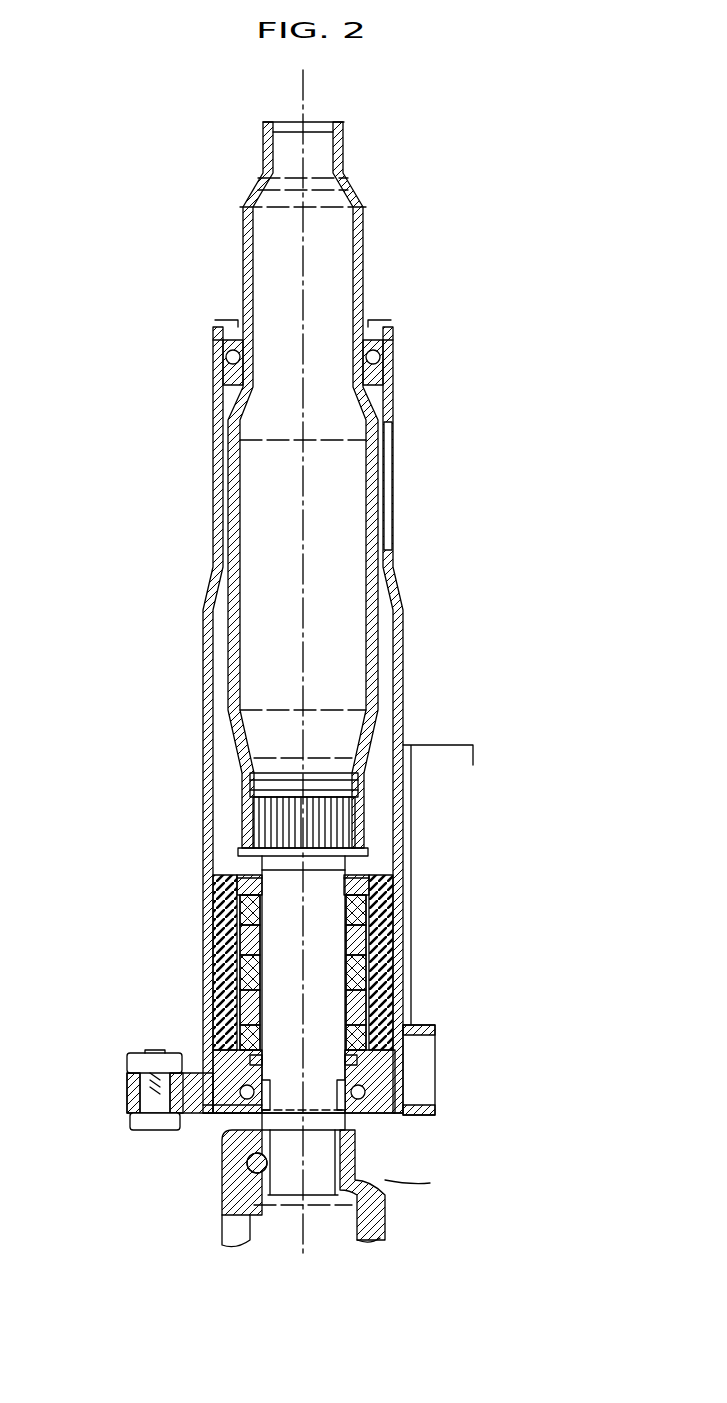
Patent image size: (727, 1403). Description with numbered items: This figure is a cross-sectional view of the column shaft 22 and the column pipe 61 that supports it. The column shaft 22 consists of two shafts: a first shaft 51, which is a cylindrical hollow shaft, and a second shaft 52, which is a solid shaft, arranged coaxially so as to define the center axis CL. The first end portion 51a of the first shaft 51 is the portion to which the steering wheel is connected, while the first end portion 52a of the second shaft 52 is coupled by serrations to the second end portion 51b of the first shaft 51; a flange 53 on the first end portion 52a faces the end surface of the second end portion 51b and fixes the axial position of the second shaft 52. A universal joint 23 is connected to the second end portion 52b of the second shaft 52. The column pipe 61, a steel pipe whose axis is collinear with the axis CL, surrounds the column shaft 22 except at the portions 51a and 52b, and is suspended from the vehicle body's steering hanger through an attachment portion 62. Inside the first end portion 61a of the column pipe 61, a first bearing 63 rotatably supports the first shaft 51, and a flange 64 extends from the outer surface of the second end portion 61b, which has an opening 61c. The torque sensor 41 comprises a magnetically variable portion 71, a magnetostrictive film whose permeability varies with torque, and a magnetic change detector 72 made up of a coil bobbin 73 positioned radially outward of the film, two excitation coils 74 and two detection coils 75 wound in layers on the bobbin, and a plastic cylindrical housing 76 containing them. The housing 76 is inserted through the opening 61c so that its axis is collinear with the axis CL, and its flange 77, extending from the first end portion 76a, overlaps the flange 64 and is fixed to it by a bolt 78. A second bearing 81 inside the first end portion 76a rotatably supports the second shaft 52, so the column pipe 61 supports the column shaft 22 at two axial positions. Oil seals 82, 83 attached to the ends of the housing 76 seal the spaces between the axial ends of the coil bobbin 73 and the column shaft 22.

The center axis CL is at (313, 95).
The column shaft 22 is at (82, 618).
The universal joint 23 is at (385, 1236).
The torque sensor 41 is at (350, 962).
The first shaft 51 is at (226, 660).
The first end portion of the first shaft 51a is at (348, 151).
The second end portion of the first shaft 51b is at (360, 805).
The second shaft 52 is at (288, 858).
The first end portion of the second shaft 52a is at (355, 825).
The second end portion of the second shaft 52b is at (338, 1179).
The flange 53 is at (375, 855).
The column pipe 61 is at (407, 612).
The first end portion of the column pipe 61a is at (393, 400).
The second end portion of the column pipe 61b is at (187, 1116).
The opening 61c is at (205, 1116).
The attachment portion 62 is at (448, 743).
The first bearing 63 is at (381, 355).
The flange 64 is at (127, 1073).
The magnetically variable portion 71 is at (327, 971).
The magnetic change detector 72 is at (402, 950).
The coil bobbin 73 is at (225, 885).
The excitation coil 74 is at (243, 912).
The detection coil 75 is at (243, 940).
The housing 76 is at (225, 1050).
The first end portion of the housing 76a is at (220, 1116).
The flange 77 is at (127, 1100).
The bolt 78 is at (155, 1130).
The second bearing 81 is at (375, 1094).
The oil seal 82 is at (395, 900).
The oil seal 83 is at (375, 1056).